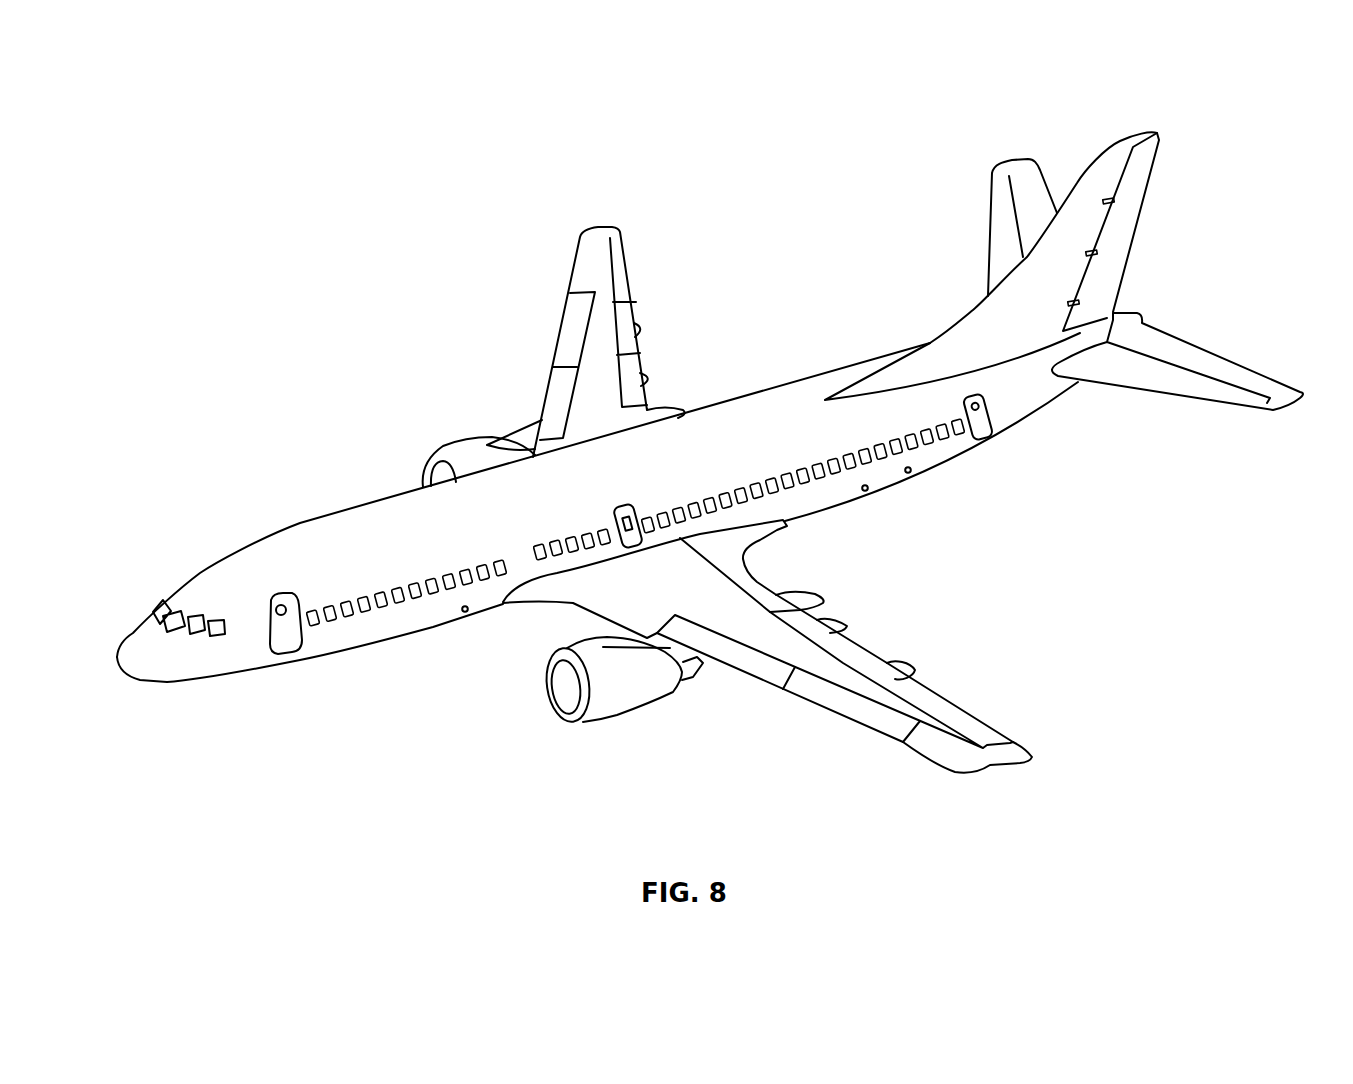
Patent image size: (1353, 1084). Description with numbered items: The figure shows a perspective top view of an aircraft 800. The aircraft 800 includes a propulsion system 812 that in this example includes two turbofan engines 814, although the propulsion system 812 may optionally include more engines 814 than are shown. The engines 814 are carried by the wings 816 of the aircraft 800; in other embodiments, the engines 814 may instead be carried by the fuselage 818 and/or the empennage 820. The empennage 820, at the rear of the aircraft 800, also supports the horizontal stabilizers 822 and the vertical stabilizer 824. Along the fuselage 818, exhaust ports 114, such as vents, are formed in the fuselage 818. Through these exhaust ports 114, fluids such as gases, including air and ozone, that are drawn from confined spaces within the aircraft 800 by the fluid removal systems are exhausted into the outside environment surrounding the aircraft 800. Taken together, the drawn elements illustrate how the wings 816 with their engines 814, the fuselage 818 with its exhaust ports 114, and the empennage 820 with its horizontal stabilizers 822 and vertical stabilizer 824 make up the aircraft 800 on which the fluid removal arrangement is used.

The aircraft 800 is at (710, 449).
The propulsion system 812 is at (518, 776).
The turbofan engines 814 is at (629, 690).
The wings 816 is at (601, 231).
The fuselage 818 is at (362, 633).
The empennage 820 is at (1042, 246).
The horizontal stabilizers 822 is at (1023, 170).
The vertical stabilizer 824 is at (1118, 148).
The exhaust ports 114 is at (467, 612).